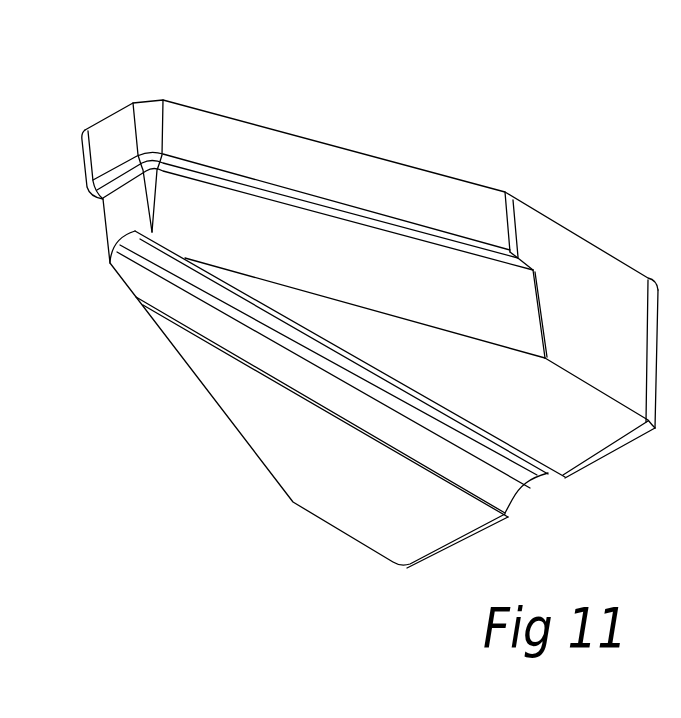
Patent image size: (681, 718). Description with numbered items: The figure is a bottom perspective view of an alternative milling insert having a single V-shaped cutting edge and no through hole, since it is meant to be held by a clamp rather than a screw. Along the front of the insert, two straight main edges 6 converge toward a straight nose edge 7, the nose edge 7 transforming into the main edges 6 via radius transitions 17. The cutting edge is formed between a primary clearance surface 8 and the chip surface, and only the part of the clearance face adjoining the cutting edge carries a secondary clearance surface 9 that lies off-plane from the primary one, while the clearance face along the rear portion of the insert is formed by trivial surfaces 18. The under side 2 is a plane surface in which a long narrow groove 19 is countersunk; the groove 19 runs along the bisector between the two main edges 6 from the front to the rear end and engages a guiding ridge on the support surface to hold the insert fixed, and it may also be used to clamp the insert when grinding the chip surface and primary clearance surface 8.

The under side 2 is at (347, 487).
The main edges 6 is at (368, 155).
The nose edge 7 is at (107, 120).
The primary clearance surface 8 is at (122, 152).
The secondary clearance surface 9 is at (136, 222).
The radius transitions 17 is at (143, 97).
The trivial surfaces 18 is at (612, 326).
The groove 19 is at (538, 487).